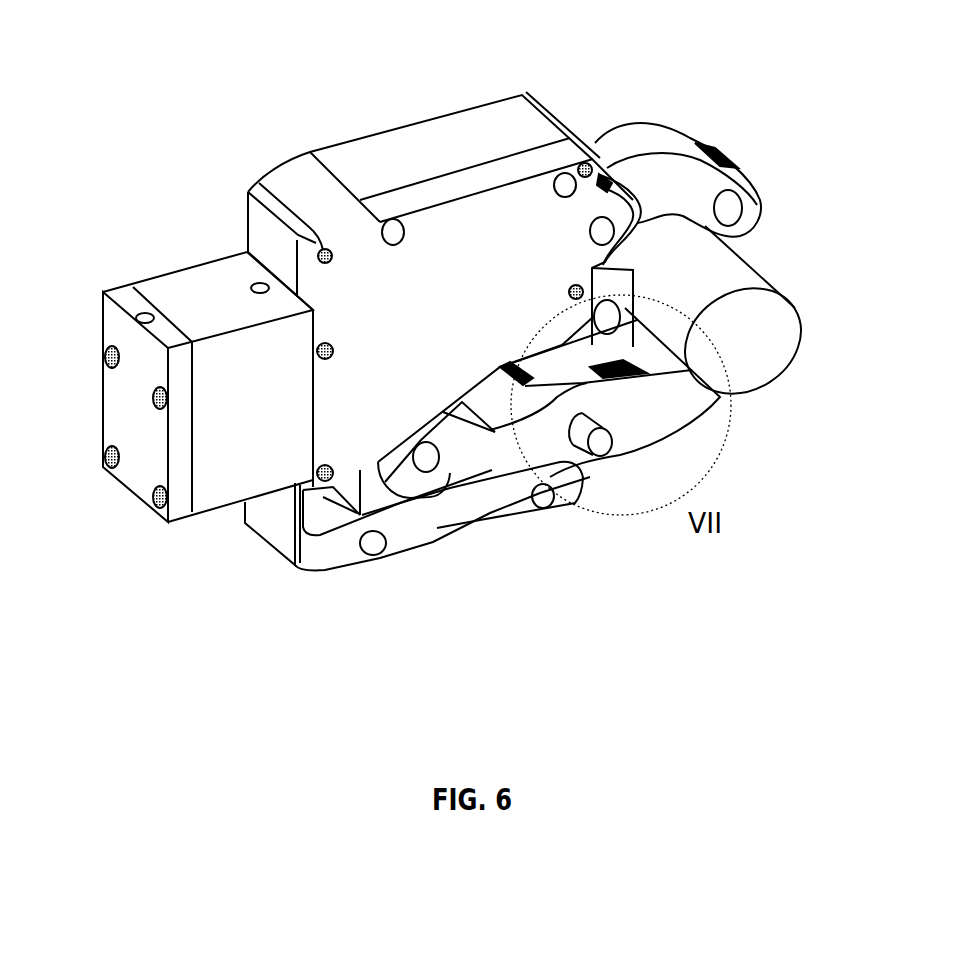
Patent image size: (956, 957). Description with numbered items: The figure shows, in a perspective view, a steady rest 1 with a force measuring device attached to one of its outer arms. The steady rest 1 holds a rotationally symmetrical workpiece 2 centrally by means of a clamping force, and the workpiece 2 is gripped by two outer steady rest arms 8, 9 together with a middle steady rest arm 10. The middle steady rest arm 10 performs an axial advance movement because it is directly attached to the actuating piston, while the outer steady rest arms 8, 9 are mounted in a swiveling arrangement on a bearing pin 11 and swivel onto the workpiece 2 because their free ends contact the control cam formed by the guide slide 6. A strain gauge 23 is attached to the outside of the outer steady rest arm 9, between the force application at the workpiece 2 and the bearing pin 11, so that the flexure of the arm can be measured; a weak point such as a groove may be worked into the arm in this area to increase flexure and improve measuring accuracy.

The steady rest 1 is at (733, 88).
The workpiece 2 is at (728, 277).
The guide slide 6 is at (363, 513).
The outer steady rest arm 8 is at (652, 142).
The outer steady rest arm 9 is at (630, 413).
The middle steady rest arm 10 is at (643, 300).
The bearing pin 11 is at (604, 232).
The strain gauge 23 is at (660, 397).